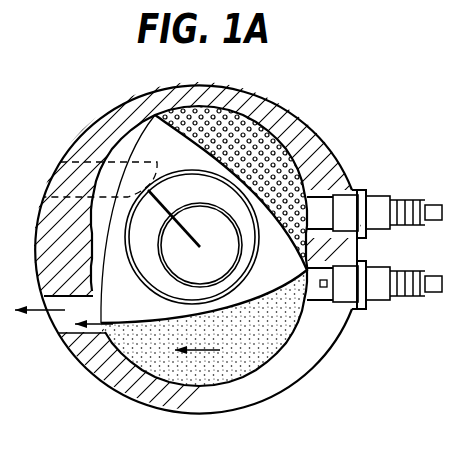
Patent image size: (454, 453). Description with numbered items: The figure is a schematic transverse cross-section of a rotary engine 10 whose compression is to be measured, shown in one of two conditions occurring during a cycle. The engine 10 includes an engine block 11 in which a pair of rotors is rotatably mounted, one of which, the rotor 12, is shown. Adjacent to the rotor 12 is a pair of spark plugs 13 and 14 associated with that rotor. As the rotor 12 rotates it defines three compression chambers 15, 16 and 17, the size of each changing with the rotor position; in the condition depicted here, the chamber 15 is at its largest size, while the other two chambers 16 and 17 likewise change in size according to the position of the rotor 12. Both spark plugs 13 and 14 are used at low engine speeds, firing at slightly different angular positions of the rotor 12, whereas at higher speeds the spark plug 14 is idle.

The rotary engine 10 is at (309, 121).
The engine block 11 is at (327, 172).
The rotor 12 is at (158, 135).
The spark plug 13 is at (384, 207).
The spark plug 14 is at (380, 290).
The compression chamber 15 is at (252, 133).
The compression chamber 16 is at (270, 334).
The compression chamber 17 is at (128, 143).